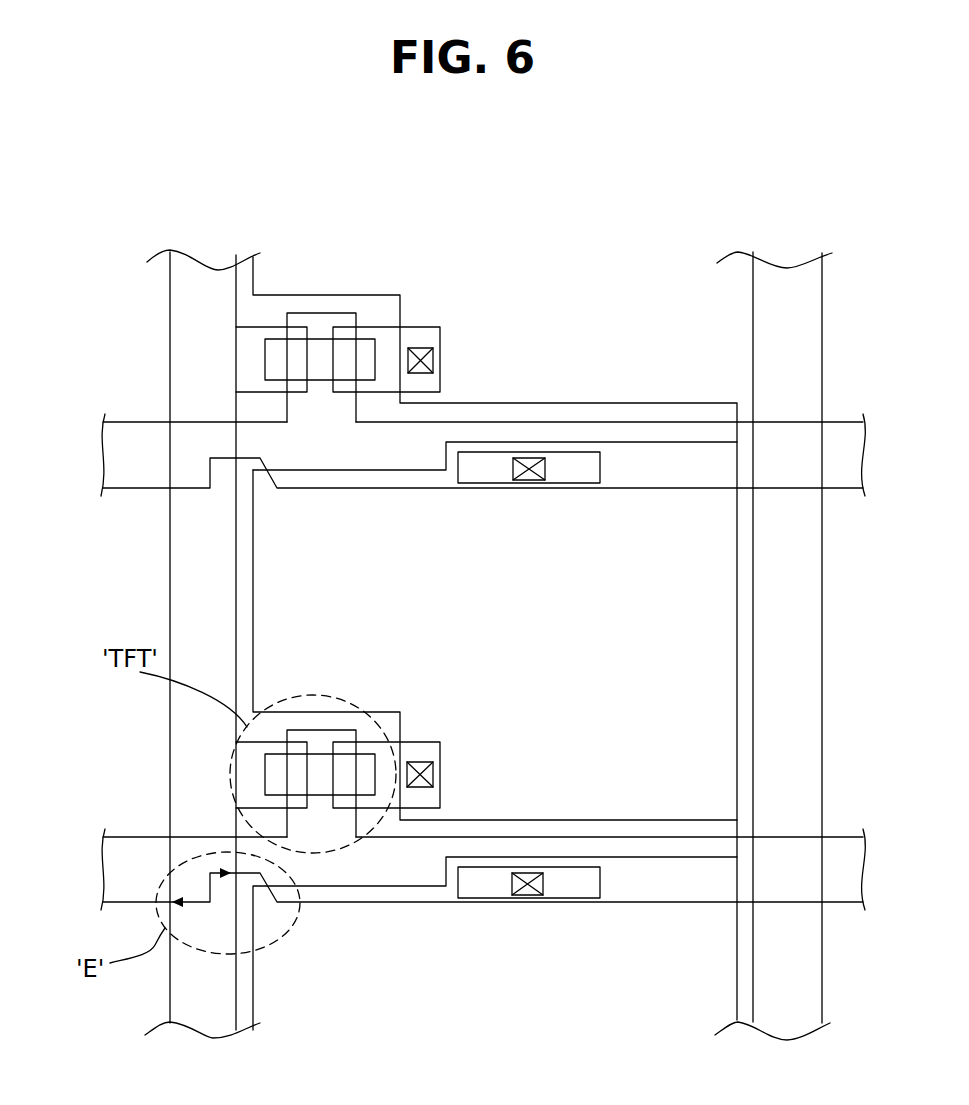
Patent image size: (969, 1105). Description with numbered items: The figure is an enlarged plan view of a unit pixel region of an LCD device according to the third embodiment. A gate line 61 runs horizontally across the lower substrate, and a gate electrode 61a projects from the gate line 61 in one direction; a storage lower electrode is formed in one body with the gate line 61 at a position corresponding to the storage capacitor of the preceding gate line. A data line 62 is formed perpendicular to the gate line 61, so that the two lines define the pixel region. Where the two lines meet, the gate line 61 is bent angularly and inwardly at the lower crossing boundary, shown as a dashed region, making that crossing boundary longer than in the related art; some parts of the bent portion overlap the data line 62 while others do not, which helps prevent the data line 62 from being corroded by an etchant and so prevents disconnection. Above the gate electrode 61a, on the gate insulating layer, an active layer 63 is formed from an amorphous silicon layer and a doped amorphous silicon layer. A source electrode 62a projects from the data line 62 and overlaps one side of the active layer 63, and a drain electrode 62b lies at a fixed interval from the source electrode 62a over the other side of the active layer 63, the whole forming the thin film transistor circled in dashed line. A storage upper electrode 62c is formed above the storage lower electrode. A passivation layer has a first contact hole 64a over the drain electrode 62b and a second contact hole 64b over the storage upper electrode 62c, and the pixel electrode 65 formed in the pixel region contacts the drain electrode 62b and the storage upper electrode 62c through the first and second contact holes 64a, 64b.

The gate line 61 is at (122, 872).
The gate electrode 61a is at (325, 735).
The data line 62 is at (183, 543).
The source electrode 62a is at (287, 732).
The drain electrode 62b is at (427, 741).
The storage upper electrode 62c is at (590, 472).
The active layer 63 is at (367, 790).
The first contact hole 64a is at (430, 780).
The second contact hole 64b is at (513, 468).
The pixel electrode 65 is at (737, 643).